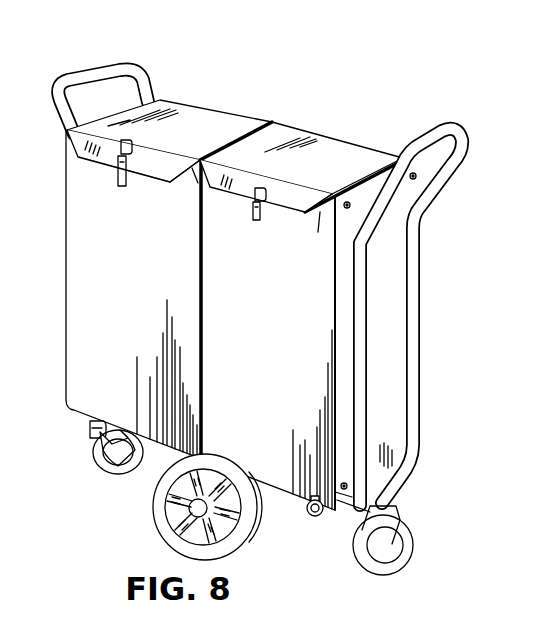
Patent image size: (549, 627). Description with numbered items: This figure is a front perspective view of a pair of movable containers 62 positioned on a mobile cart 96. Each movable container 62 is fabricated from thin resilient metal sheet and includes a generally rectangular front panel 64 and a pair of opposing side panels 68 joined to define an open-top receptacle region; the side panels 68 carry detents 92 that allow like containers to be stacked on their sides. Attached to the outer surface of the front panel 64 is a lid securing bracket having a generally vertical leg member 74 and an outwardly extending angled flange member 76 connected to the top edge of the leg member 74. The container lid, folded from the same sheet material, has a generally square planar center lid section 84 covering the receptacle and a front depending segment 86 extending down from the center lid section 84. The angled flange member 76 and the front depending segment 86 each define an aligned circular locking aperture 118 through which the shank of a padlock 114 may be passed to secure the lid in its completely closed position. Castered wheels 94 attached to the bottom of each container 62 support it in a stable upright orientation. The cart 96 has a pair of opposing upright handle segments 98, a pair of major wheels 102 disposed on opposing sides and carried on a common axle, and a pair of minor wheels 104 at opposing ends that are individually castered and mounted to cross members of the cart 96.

The movable container 62 is at (231, 98).
The front panel 64 is at (141, 308).
The side panel 68 is at (390, 318).
The vertical leg member 74 is at (193, 184).
The angled flange member 76 is at (190, 178).
The center lid section 84 is at (243, 125).
The front depending segment 86 is at (103, 161).
The detent 92 is at (416, 178).
The castered wheel 94 is at (91, 438).
The cart 96 is at (110, 63).
The upright handle segment 98 is at (78, 76).
The major wheel 102 is at (163, 527).
The minor wheel 104 is at (107, 465).
The padlock 114 is at (128, 188).
The locking aperture 118 is at (124, 142).